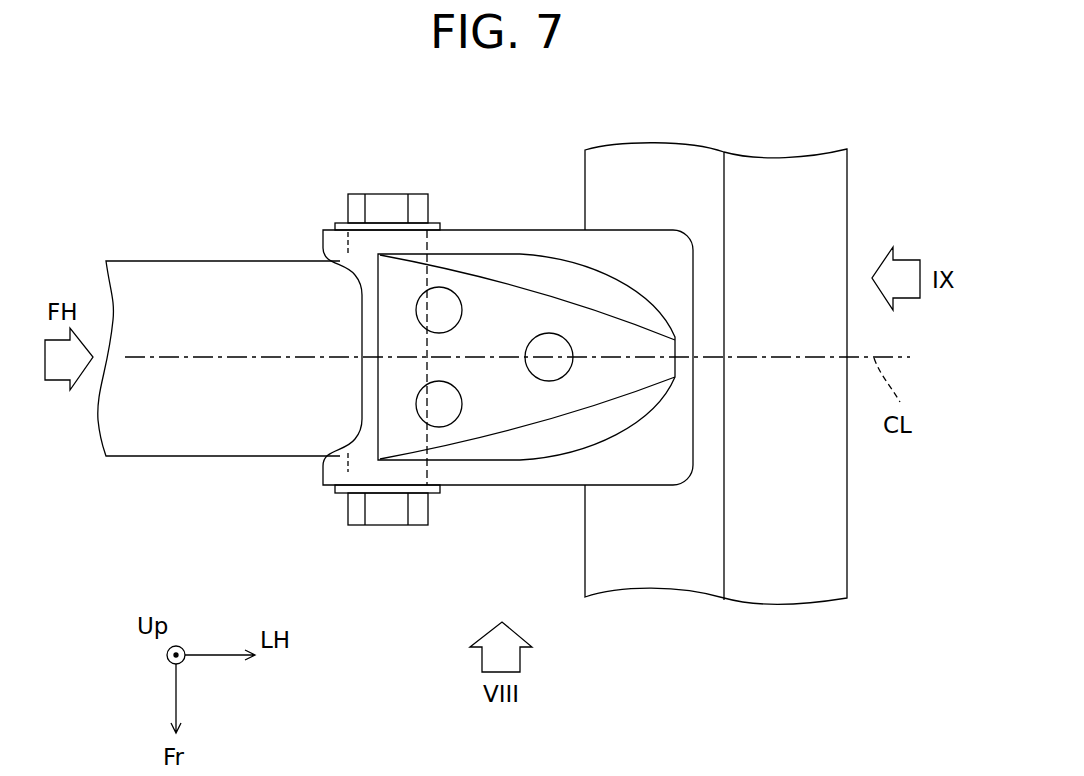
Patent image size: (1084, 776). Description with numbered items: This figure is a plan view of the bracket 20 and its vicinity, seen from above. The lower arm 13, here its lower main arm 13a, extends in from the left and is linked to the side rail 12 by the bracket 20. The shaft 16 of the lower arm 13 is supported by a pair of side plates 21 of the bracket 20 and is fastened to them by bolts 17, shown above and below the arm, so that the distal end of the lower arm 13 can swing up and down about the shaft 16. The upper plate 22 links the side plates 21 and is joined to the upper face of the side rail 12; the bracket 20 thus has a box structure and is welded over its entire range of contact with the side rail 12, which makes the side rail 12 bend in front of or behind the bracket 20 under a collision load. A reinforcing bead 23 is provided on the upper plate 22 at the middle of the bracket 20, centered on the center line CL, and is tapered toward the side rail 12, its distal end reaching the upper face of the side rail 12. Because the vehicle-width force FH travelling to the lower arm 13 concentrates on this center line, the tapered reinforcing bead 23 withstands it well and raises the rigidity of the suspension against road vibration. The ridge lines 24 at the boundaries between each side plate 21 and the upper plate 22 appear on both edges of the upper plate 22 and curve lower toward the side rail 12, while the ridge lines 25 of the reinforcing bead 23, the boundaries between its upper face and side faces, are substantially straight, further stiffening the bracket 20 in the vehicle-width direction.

The side rail 12 is at (847, 190).
The lower arm 13 is at (219, 325).
The lower main arm 13a is at (175, 268).
The shaft 16 is at (352, 217).
The bolts 17 is at (388, 198).
The bracket 20 is at (514, 348).
The side plates 21 is at (468, 230).
The upper plate 22 is at (640, 240).
The reinforcing bead 23 is at (644, 362).
The ridge line 24 is at (490, 228).
The ridge lines 25 is at (561, 292).